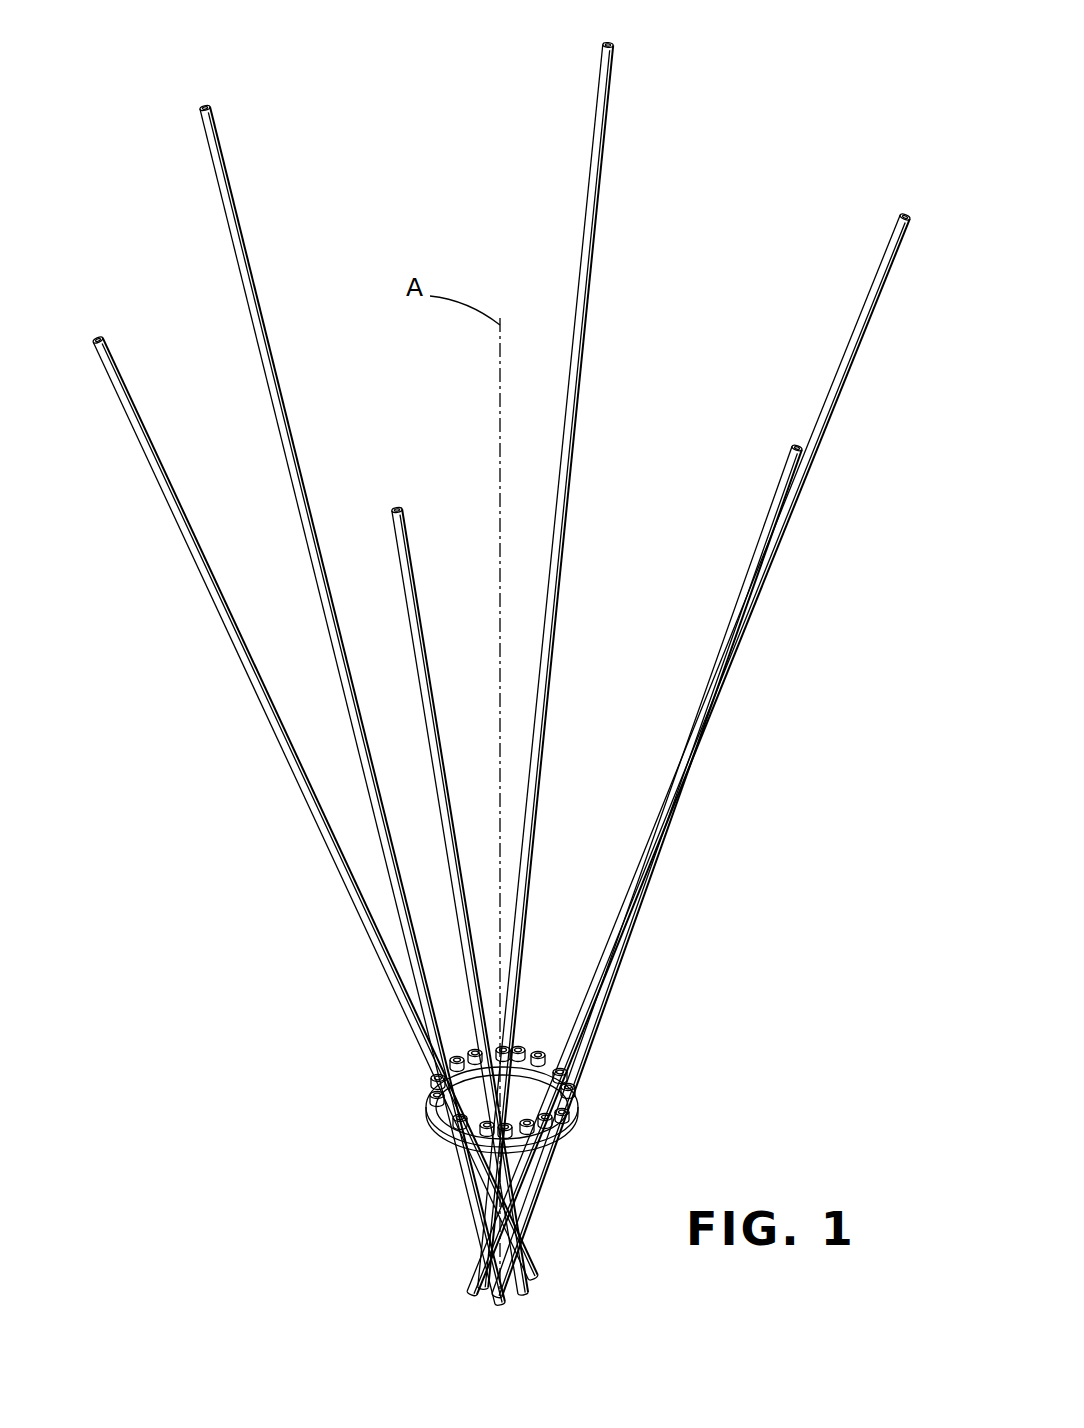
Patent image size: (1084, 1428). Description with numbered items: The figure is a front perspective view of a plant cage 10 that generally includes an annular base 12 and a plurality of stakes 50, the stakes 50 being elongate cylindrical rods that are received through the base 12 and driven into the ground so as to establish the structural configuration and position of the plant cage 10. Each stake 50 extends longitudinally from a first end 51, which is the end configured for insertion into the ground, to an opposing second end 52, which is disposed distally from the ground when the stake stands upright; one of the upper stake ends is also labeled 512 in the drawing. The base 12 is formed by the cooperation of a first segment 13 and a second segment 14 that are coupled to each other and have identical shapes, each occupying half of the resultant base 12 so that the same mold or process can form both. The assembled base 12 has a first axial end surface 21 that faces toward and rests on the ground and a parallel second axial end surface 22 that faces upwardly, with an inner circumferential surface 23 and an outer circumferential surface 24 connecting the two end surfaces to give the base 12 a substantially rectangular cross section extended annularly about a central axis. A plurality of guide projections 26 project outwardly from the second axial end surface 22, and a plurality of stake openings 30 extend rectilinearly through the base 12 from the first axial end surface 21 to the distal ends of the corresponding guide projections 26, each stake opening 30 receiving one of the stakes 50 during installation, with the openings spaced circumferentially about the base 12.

The plant cage 10 is at (160, 270).
The base 12 is at (467, 1103).
The first segment 13 is at (467, 1118).
The second segment 14 is at (535, 1145).
The first axial end surface 21 is at (566, 1127).
The second axial end surface 22 is at (570, 1097).
The inner circumferential surface 23 is at (540, 1078).
The outer circumferential surface 24 is at (576, 1120).
The guide projections 26 is at (487, 1130).
The stake openings 30 is at (505, 1050).
The stakes 50 is at (252, 270).
The first end 51 is at (600, 1311).
The second end 52 is at (204, 106).
The rod upper end 512 is at (906, 215).